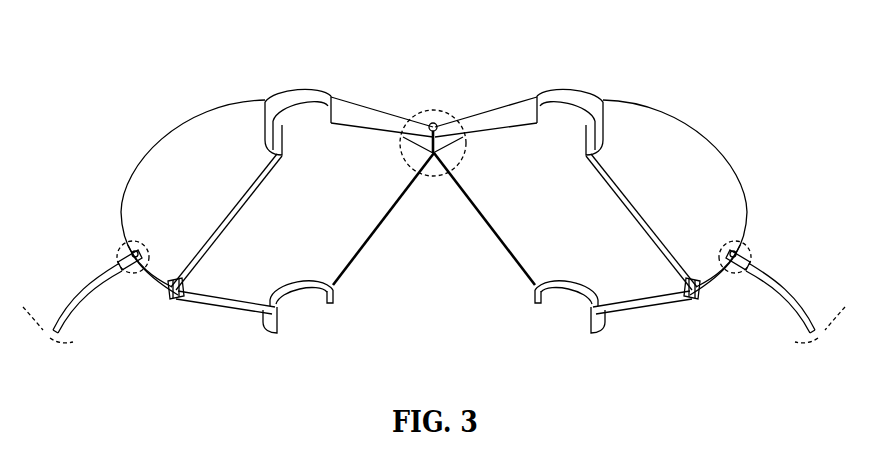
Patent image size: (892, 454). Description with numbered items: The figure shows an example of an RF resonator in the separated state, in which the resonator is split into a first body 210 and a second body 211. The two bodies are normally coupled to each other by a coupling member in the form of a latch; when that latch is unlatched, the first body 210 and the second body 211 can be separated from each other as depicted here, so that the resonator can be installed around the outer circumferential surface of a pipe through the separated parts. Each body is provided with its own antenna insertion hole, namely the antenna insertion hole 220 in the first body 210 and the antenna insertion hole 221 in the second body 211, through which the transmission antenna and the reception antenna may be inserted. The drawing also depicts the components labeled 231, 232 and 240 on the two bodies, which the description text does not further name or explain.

The first body 210 is at (200, 138).
The second body 211 is at (687, 143).
The antenna insertion hole 220 is at (123, 243).
The antenna insertion hole 221 is at (750, 243).
The first fixing tab 231 is at (163, 293).
The second fixing tab 232 is at (710, 293).
The central coupling member 240 is at (433, 108).